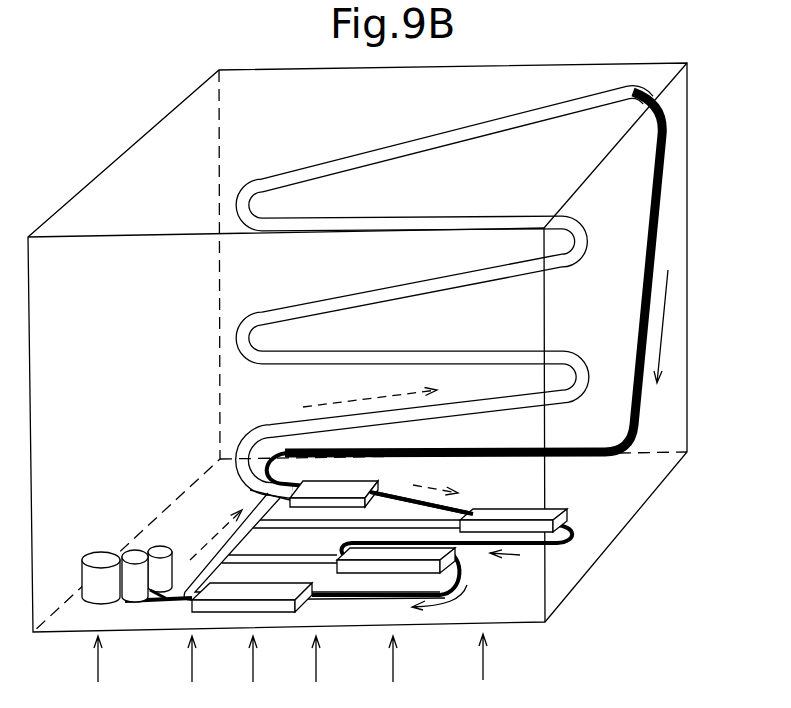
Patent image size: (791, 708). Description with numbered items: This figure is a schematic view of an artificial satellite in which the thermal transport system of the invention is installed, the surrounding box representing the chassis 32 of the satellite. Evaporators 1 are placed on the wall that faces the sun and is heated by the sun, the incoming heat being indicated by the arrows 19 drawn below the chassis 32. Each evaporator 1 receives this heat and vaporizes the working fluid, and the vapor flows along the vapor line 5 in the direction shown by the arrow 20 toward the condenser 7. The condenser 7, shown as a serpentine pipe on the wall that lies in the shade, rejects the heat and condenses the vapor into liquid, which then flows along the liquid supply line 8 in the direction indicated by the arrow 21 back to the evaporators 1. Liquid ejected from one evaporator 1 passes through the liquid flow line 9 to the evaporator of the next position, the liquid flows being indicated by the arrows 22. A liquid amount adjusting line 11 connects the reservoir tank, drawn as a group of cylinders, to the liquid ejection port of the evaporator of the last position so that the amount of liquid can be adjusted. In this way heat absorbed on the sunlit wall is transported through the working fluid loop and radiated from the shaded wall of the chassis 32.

The evaporator 1 is at (380, 479).
The vapor line 5 is at (253, 507).
The condenser 7 is at (318, 160).
The liquid supply line 8 is at (245, 465).
The liquid flow line 9 is at (566, 547).
The liquid amount adjusting line 11 is at (163, 603).
The arrow indicating heat direction 19 is at (485, 657).
The arrow showing vapor flow direction 20 is at (328, 403).
The arrow showing liquid flow direction 21 is at (663, 328).
The arrows indicating liquid flows 22 is at (537, 558).
The chassis of the artificial satellite 32 is at (100, 171).